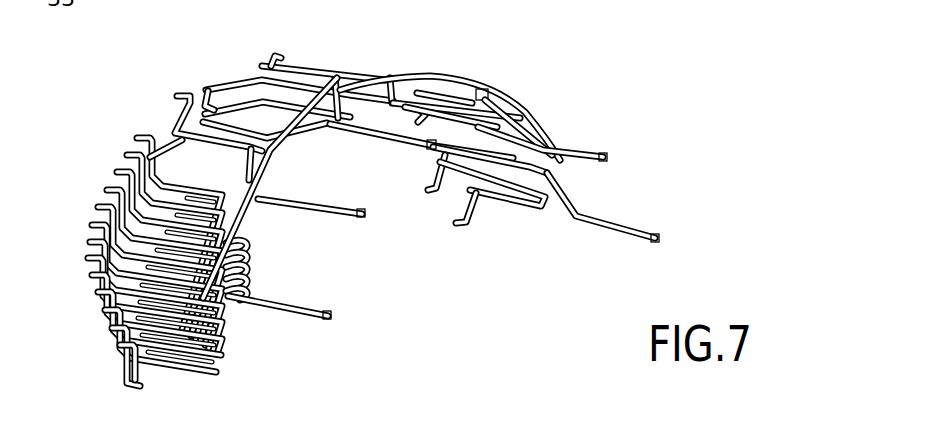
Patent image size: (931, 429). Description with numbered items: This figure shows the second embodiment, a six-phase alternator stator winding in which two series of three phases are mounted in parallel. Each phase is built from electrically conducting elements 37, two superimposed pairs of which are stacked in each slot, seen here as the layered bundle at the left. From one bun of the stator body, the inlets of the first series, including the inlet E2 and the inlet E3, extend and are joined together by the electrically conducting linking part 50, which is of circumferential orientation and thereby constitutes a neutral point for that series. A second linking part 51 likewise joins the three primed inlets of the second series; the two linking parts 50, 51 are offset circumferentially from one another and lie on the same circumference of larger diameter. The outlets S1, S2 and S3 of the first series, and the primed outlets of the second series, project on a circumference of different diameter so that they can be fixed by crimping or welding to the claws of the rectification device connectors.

The electrically conducting elements 37 is at (207, 264).
The linking part 50 is at (272, 156).
The linking part 51 is at (462, 72).
The inlet E2 is at (262, 196).
The inlet E3 is at (356, 128).
The outlet S1 is at (323, 320).
The outlet S2 is at (350, 216).
The outlet S3 is at (398, 145).